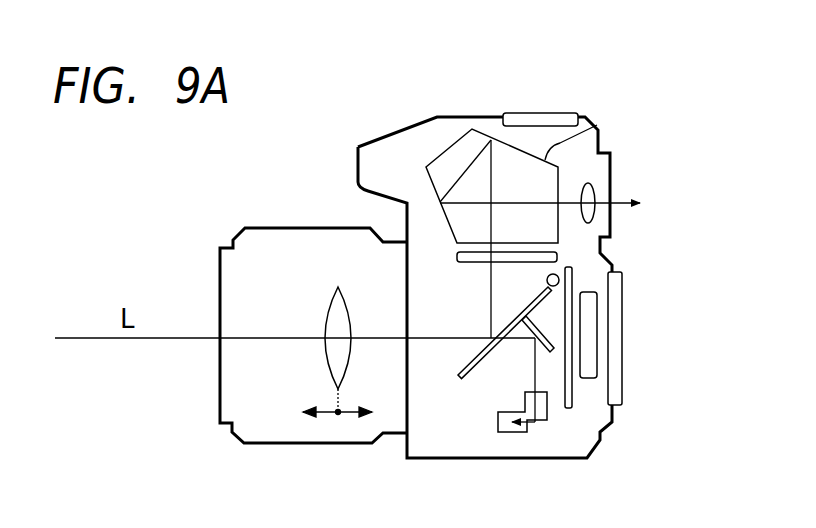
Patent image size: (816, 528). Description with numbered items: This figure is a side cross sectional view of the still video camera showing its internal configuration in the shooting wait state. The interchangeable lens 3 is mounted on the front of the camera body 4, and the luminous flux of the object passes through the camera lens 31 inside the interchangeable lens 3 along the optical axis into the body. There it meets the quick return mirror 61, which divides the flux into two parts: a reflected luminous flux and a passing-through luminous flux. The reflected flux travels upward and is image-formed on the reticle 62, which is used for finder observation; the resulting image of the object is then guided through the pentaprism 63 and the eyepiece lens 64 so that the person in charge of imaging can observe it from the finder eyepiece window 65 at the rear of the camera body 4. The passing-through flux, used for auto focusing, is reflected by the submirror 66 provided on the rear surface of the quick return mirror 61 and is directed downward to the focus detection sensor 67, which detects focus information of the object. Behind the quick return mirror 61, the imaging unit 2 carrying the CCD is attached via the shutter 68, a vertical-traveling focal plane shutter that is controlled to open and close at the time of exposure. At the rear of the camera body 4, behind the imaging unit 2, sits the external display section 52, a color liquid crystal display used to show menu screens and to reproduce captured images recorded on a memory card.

The camera body 4 is at (466, 116).
The interchangeable lens 3 is at (290, 227).
The camera lens 31 is at (338, 286).
The pentaprism 63 is at (597, 125).
The eyepiece lens 64 is at (589, 183).
The finder eyepiece window 65 is at (611, 192).
The reticle 62 is at (556, 257).
The quick return mirror 61 is at (462, 377).
The submirror 66 is at (541, 325).
The imaging unit 2 is at (598, 320).
The external display section 52 is at (623, 390).
The shutter 68 is at (574, 403).
The focus detection sensor 67 is at (527, 432).